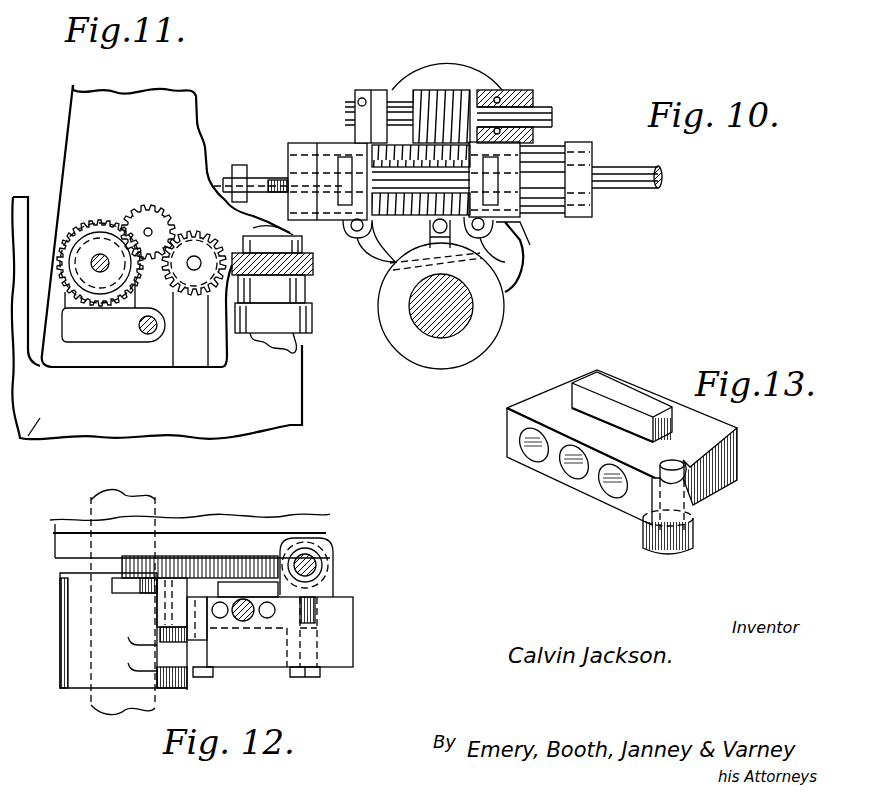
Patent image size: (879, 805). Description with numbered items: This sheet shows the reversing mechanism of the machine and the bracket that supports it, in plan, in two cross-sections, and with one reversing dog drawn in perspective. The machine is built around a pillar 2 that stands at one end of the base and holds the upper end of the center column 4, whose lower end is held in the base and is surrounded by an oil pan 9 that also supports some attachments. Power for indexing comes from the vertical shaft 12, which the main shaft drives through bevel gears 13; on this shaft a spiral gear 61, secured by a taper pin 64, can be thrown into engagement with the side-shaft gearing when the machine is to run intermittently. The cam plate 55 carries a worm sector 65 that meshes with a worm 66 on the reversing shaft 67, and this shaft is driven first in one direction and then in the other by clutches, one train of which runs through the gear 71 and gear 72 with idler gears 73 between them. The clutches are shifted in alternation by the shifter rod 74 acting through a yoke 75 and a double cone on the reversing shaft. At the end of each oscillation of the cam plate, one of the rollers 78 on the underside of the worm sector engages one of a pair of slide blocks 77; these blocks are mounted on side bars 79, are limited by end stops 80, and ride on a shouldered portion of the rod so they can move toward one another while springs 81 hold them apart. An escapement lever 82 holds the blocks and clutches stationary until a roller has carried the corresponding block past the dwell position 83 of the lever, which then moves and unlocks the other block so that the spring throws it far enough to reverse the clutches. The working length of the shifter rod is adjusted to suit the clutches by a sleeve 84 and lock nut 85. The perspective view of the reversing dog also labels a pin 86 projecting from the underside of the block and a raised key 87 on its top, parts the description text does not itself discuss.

In FIG. 11, the pillar 2 is at (68, 108).
In FIG. 10, the center column 4 is at (434, 322).
In FIG. 12, the center column 4 is at (108, 502).
In FIG. 11, the oil pan 9 is at (31, 446).
In FIG. 11, the vertical shaft 12 is at (307, 347).
In FIG. 11, the bevel gears 13 is at (311, 322).
In FIG. 12, the cam plate 55 is at (252, 524).
In FIG. 11, the spiral gear 61 is at (220, 362).
In FIG. 12, the taper pin 64 is at (310, 563).
In FIG. 12, the worm sector 65 is at (198, 556).
In FIG. 10, the worm 66 is at (440, 90).
In FIG. 12, the worm 66 is at (325, 545).
In FIG. 11, the reversing shaft 67 is at (101, 255).
In FIG. 10, the reversing shaft 67 is at (542, 110).
In FIG. 11, the gear 71 is at (196, 236).
In FIG. 11, the gear 72 is at (86, 226).
In FIG. 11, the idler gears 73 is at (147, 220).
In FIG. 11, the shifter rod 74 is at (145, 333).
In FIG. 10, the shifter rod 74 is at (632, 176).
In FIG. 12, the shifter rod 74 is at (245, 622).
In FIG. 11, the yoke 75 is at (96, 325).
In FIG. 10, the slide blocks 77 is at (330, 152).
In FIG. 13, the slide blocks 77 is at (547, 403).
In FIG. 12, the rollers 78 is at (125, 586).
In FIG. 10, the side bars 79 is at (550, 152).
In FIG. 12, the side bars 79 is at (270, 611).
In FIG. 10, the end stops 80 is at (303, 205).
In FIG. 12, the end stops 80 is at (270, 620).
In FIG. 10, the springs 81 is at (410, 150).
In FIG. 10, the escapement lever 82 is at (500, 222).
In FIG. 12, the escapement lever 82 is at (170, 642).
In FIG. 10, the dwell position 83 is at (372, 244).
In FIG. 10, the sleeve 84 is at (258, 177).
In FIG. 10, the lock nut 85 is at (240, 165).
In FIG. 10, the pin 86 is at (352, 230).
In FIG. 13, the pin 86 is at (694, 538).
In FIG. 10, the key 87 is at (341, 157).
In FIG. 12, the key 87 is at (258, 587).
In FIG. 13, the key 87 is at (622, 392).